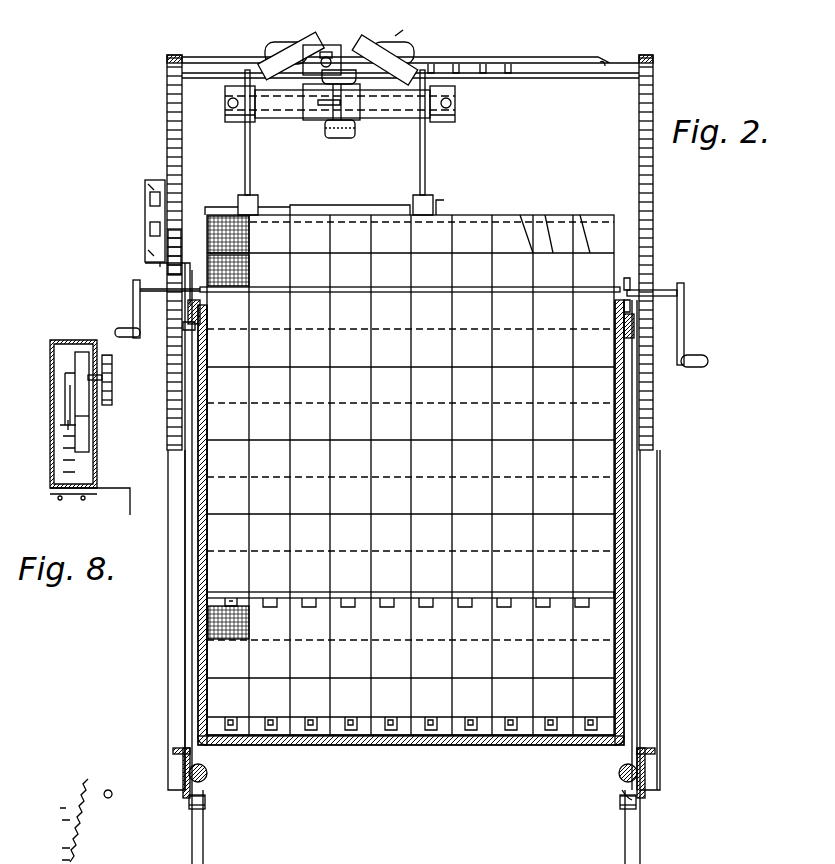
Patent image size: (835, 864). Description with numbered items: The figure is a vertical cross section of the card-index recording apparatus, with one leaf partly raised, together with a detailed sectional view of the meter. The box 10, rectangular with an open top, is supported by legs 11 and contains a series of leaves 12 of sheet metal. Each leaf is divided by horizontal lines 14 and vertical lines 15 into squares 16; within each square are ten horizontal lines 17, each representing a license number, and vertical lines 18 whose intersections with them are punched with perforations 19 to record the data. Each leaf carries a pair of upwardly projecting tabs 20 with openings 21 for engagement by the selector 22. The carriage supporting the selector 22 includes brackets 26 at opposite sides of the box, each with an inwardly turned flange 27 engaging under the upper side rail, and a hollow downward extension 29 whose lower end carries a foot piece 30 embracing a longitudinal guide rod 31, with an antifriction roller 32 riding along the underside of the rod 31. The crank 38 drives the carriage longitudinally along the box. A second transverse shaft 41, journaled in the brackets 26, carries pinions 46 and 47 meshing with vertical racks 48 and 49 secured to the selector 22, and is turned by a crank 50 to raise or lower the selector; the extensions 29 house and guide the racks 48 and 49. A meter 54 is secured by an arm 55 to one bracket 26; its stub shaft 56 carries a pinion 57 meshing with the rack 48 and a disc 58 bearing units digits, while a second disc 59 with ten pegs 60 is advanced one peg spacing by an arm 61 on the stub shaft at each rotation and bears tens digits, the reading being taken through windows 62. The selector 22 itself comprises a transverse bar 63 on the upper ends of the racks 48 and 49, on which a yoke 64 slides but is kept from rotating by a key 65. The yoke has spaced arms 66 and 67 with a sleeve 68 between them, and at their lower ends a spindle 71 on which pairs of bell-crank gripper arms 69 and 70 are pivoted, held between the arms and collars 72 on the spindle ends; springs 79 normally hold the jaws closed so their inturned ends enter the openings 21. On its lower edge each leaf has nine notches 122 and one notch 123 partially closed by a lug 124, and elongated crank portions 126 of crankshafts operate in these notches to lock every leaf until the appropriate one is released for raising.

In FIG. 2, the box 10 is at (480, 748).
In FIG. 2, the legs 11 is at (641, 838).
In FIG. 2, the leaves or plates 12 is at (489, 215).
In FIG. 2, the horizontal lines 14 is at (548, 215).
In FIG. 2, the vertical lines 15 is at (586, 216).
In FIG. 2, the squares or spaces 16 is at (520, 215).
In FIG. 2, the horizontal lines 17 is at (218, 215).
In FIG. 2, the vertical lines 18 is at (249, 243).
In FIG. 2, the perforations 19 is at (249, 282).
In FIG. 2, the tabs 20 is at (442, 205).
In FIG. 2, the opening 21 is at (398, 212).
In FIG. 2, the selector 22 is at (398, 29).
In FIG. 2, the brackets 26 is at (192, 410).
In FIG. 2, the inwardly turned flange 27 is at (200, 342).
In FIG. 2, the downward extension 29 is at (167, 600).
In FIG. 2, the foot piece 30 is at (183, 773).
In FIG. 2, the guide rod 31 is at (208, 773).
In FIG. 2, the antifriction roller 32 is at (632, 810).
In FIG. 2, the crank 38 is at (125, 307).
In FIG. 2, the second transverse shaft 41 is at (350, 292).
In FIG. 2, the pinion 46 is at (148, 290).
In FIG. 2, the pinion 47 is at (652, 282).
In FIG. 2, the vertical rack 48 is at (167, 142).
In FIG. 2, the vertical rack 49 is at (653, 194).
In FIG. 2, the crank 50 is at (685, 307).
In FIG. 2, the meter 54 is at (148, 228).
In FIG. 8, the meter 54 is at (60, 425).
In FIG. 2, the arm 55 is at (148, 263).
In FIG. 8, the arm 55 is at (116, 488).
In FIG. 8, the stub shaft 56 is at (110, 404).
In FIG. 2, the pinion 57 is at (178, 235).
In FIG. 8, the pinion 57 is at (112, 380).
In FIG. 8, the disc 58 is at (54, 359).
In FIG. 8, the second disc 59 is at (88, 441).
In FIG. 8, the pegs 60 is at (70, 446).
In FIG. 8, the pointer 61 is at (65, 401).
In FIG. 2, the windows 62 is at (145, 194).
In FIG. 2, the transverse bar 63 is at (608, 62).
In FIG. 2, the yoke 64 is at (355, 45).
In FIG. 2, the key 65 is at (522, 57).
In FIG. 2, the arm 66 is at (267, 70).
In FIG. 2, the arm 67 is at (430, 72).
In FIG. 2, the sleeve 68 is at (326, 45).
In FIG. 2, the gripper arms 69 is at (250, 160).
In FIG. 2, the gripper arms 70 is at (420, 165).
In FIG. 2, the spindle 71 is at (225, 104).
In FIG. 2, the collars 72 is at (230, 120).
In FIG. 2, the springs 79 is at (320, 46).
In FIG. 2, the notches 122 is at (432, 598).
In FIG. 2, the notch 123 is at (272, 592).
In FIG. 2, the lug 124 is at (268, 606).
In FIG. 2, the crank portions 126 is at (346, 732).